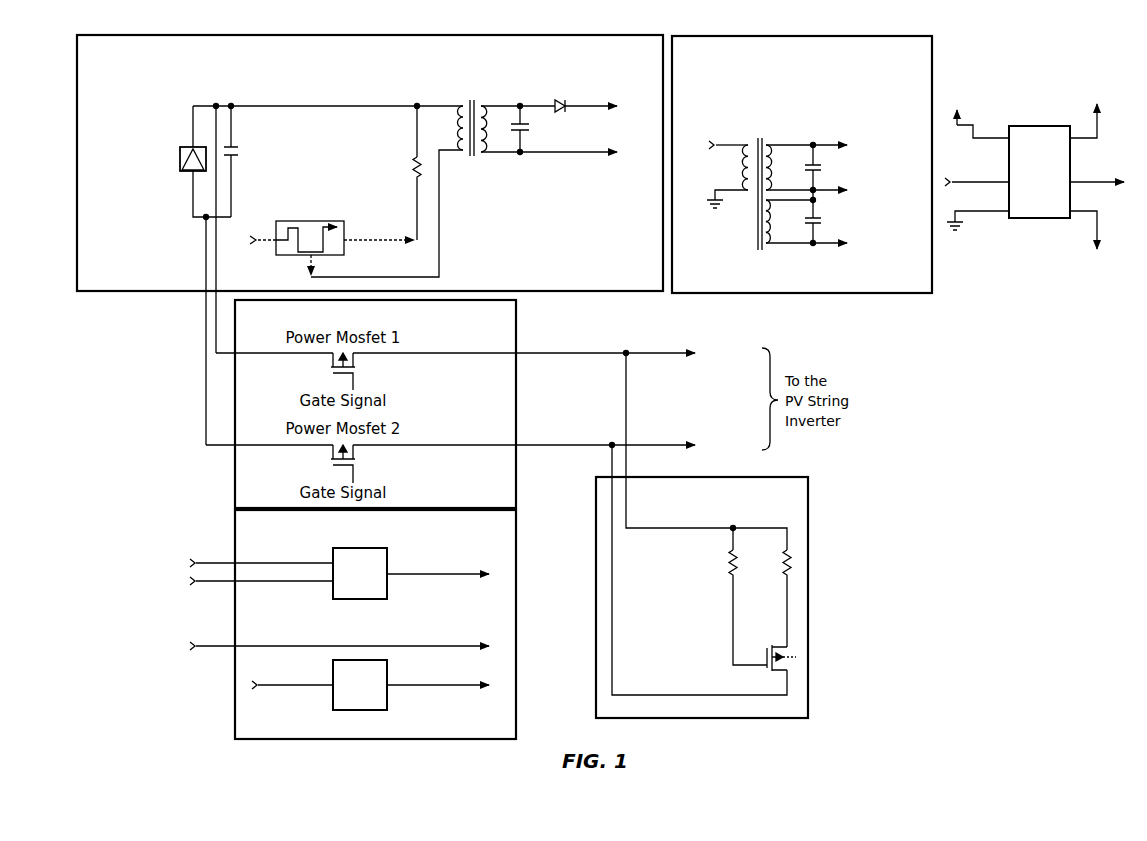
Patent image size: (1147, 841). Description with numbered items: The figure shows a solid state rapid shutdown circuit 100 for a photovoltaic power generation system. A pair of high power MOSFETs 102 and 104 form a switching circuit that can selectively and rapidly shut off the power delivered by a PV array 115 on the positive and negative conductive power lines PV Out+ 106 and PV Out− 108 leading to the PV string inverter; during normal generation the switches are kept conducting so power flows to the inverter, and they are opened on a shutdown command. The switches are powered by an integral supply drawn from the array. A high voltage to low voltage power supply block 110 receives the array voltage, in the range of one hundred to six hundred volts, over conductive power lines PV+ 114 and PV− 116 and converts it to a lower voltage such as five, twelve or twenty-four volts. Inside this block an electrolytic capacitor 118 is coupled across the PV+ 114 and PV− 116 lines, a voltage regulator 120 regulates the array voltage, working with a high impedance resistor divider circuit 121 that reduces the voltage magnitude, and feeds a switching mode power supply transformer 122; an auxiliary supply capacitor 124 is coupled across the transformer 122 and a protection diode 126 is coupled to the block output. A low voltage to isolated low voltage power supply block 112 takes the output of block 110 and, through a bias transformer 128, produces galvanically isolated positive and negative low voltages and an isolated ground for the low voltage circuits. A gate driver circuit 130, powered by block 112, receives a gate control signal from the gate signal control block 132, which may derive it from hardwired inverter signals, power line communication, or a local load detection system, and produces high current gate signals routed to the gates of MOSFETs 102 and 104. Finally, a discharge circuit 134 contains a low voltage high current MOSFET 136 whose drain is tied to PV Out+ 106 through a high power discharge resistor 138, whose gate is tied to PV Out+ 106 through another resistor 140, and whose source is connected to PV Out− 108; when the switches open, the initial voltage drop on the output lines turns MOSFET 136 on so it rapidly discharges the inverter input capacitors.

The rapid shutdown circuit 100 is at (1088, 624).
The power MOSFET 102 is at (330, 452).
The power MOSFET 104 is at (330, 360).
The positive conductive power line PV Out+ 106 is at (640, 352).
The negative conductive power line PV Out− 108 is at (640, 444).
The high voltage to low voltage power supply block 110 is at (378, 35).
The low voltage to isolated low voltage power supply block 112 is at (790, 36).
The conductive power line PV+ 114 is at (209, 104).
The PV array 115 is at (184, 146).
The conductive power line PV− 116 is at (193, 198).
The electrolytic capacitor 118 is at (238, 150).
The voltage regulator 120 is at (300, 257).
The high impedance resistor divider circuit 121 is at (419, 160).
The switching mode power supply transformer 122 is at (472, 155).
The auxiliary supply capacitor 124 is at (527, 128).
The protection diode 126 is at (560, 110).
The bias transformer 128 is at (746, 210).
The gate driver circuit 130 is at (1040, 220).
The gate signal control block 132 is at (518, 610).
The discharge circuit 134 is at (702, 547).
The low voltage high current MOSFET 136 is at (780, 645).
The high power discharge resistor 138 is at (783, 561).
The resistor 140 is at (727, 566).